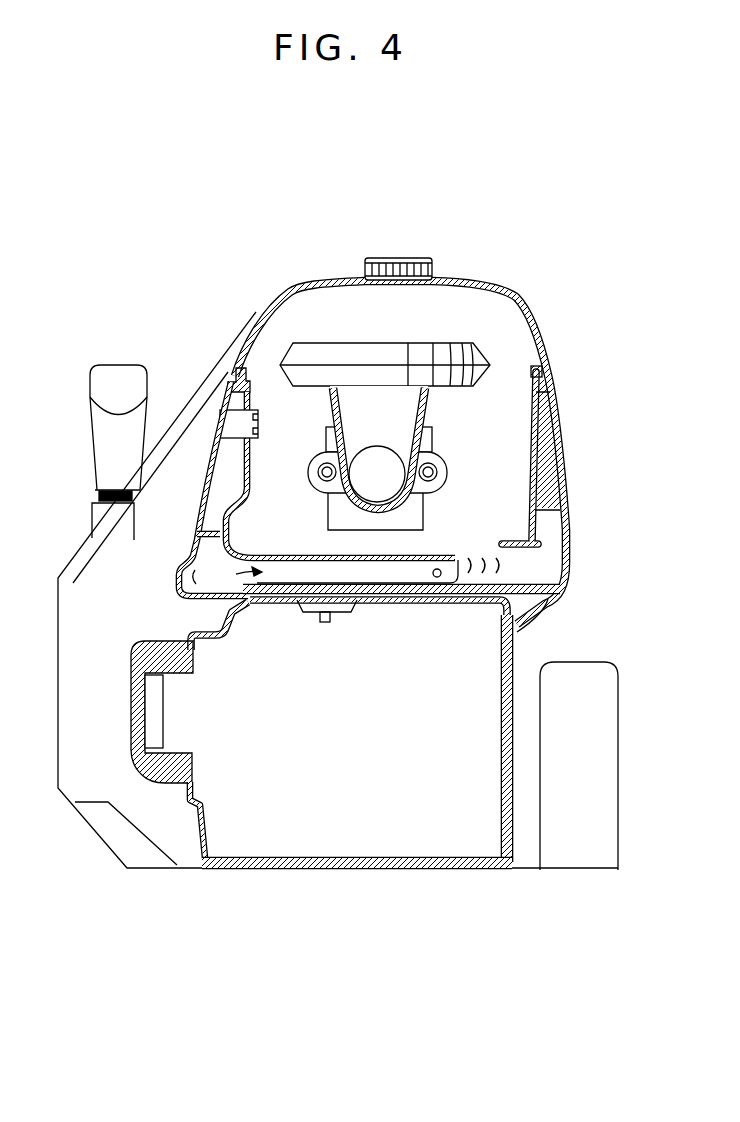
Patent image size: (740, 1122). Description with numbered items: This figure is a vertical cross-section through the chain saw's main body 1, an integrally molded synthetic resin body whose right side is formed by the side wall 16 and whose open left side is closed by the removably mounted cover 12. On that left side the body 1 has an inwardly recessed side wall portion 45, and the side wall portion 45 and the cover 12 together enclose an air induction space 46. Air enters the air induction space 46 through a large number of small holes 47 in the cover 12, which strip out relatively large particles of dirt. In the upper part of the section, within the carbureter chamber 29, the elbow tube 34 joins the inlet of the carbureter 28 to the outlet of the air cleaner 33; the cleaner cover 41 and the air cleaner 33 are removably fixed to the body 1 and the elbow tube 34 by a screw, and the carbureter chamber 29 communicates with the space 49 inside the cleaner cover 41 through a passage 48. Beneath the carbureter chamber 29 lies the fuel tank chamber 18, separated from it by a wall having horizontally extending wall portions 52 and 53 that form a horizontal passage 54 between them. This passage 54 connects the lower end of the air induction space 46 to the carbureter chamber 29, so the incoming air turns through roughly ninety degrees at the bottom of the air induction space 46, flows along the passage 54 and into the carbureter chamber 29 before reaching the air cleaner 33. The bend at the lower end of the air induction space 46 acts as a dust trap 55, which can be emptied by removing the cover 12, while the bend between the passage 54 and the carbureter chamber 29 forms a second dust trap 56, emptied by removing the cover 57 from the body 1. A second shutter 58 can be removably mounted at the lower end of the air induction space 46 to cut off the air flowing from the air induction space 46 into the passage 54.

The main body 1 is at (383, 871).
The cover 12 is at (215, 402).
The side wall 16 is at (517, 647).
The fuel tank chamber 18 is at (263, 837).
The carbureter 28 is at (337, 515).
The carbureter chamber 29 is at (447, 502).
The air cleaner 33 is at (457, 347).
The elbow tube 34 is at (424, 420).
The cleaner cover 41 is at (447, 282).
The side wall portion 45 is at (237, 487).
The air induction space 46 is at (220, 460).
The small holes 47 is at (207, 430).
The passage 48 is at (268, 365).
The space 49 is at (350, 318).
The horizontally extending wall portion 52 is at (440, 597).
The horizontally extending wall portion 53 is at (287, 557).
The horizontal passage 54 is at (382, 572).
The dust trap 55 is at (213, 573).
The second dust trap 56 is at (527, 570).
The cover 57 is at (567, 538).
The second shutter 58 is at (195, 528).